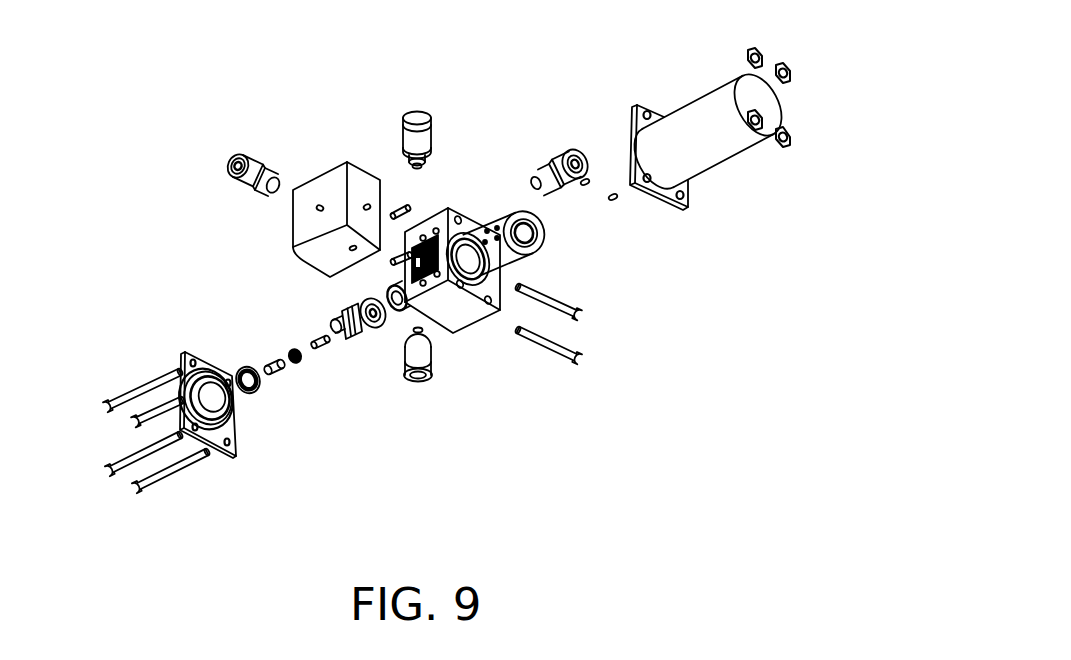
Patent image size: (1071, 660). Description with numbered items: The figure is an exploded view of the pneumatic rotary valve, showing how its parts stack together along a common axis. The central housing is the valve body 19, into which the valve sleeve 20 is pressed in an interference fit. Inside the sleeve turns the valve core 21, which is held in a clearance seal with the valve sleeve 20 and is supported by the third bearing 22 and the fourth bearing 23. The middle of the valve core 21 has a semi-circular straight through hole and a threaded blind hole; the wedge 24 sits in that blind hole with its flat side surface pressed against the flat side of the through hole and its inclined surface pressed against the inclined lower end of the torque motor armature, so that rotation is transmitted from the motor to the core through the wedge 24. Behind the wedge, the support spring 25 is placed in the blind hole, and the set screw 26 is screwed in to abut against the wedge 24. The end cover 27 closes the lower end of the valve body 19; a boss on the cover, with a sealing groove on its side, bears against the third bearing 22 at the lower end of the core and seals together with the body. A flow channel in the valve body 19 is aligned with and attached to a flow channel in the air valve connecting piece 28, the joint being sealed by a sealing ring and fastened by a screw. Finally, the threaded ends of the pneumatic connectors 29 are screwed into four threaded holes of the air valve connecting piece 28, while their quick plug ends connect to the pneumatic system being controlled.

The valve body 19 is at (499, 300).
The valve sleeve 20 is at (546, 246).
The valve core 21 is at (434, 367).
The third bearing 22 is at (392, 296).
The fourth bearing 23 is at (251, 395).
The wedge 24 is at (365, 330).
The support spring 25 is at (290, 353).
The set screw 26 is at (272, 377).
The end cover 27 is at (178, 370).
The air valve connecting piece 28 is at (332, 196).
The pneumatic connectors 29 is at (551, 173).